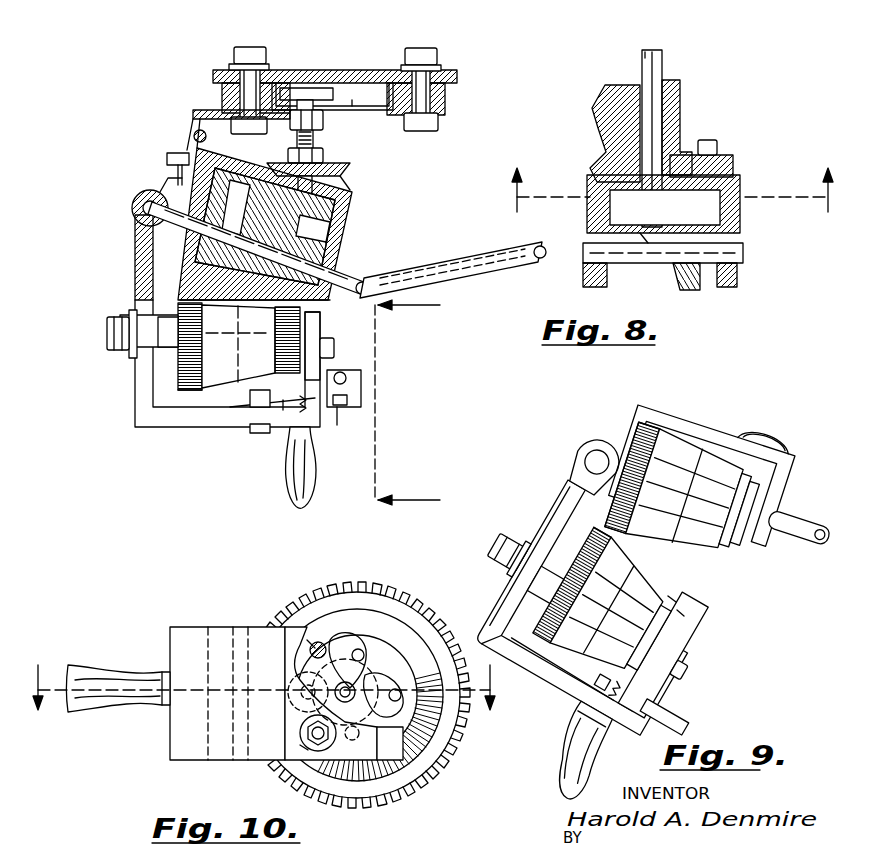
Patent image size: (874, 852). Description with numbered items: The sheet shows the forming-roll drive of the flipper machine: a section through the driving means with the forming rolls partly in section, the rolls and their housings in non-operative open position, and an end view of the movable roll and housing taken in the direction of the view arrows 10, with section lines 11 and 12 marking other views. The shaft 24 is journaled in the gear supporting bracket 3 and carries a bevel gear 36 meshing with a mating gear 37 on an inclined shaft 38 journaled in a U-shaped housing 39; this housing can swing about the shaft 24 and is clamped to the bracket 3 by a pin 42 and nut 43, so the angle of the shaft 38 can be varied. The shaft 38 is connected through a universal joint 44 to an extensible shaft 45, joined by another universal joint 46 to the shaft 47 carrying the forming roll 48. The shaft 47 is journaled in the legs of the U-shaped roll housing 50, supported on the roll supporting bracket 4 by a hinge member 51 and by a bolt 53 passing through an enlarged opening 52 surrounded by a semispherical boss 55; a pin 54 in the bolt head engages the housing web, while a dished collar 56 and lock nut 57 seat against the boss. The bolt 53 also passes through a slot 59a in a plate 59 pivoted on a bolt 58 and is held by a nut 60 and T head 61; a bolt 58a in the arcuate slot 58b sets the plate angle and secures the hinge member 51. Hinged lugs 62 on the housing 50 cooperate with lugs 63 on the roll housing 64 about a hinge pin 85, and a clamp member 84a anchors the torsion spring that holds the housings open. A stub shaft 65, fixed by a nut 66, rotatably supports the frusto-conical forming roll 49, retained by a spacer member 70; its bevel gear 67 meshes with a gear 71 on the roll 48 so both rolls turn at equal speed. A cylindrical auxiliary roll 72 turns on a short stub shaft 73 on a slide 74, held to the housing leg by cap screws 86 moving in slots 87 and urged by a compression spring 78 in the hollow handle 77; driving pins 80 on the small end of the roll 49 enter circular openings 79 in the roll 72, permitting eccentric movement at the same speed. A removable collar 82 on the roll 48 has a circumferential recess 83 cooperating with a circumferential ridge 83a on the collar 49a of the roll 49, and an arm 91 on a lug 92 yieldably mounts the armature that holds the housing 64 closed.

In FIG. 8, the gear supporting bracket 3 is at (672, 105).
In FIG. 8, the roll supporting bracket 4 is at (330, 72).
In FIG. 8, the view arrows 10— 10 is at (407, 408).
In FIG. 10, the section line 11 is at (272, 672).
In FIG. 8, the section line 12 is at (648, 204).
In FIG. 8, the shaft 24 is at (663, 68).
In FIG. 8, the bevel gear 36 is at (630, 263).
In FIG. 8, the mating gear 37 is at (690, 290).
In FIG. 8, the inclined shaft 38 is at (660, 263).
In FIG. 8, the U-shaped housing 39 is at (740, 185).
In FIG. 8, the pin 42 is at (708, 140).
In FIG. 8, the nut 43 is at (720, 155).
In FIG. 8, the universal joint 44 is at (540, 262).
In FIG. 8, the extensible shaft 45 is at (470, 282).
In FIG. 8, the universal joint 46 is at (375, 262).
In FIG. 9, the universal joint 46 is at (801, 519).
In FIG. 8, the roll shaft 47 is at (330, 240).
In FIG. 8, the forming roll 48 is at (190, 258).
In FIG. 9, the forming roll 48 is at (733, 516).
In FIG. 8, the frusto-conical forming roll 49 is at (225, 385).
In FIG. 9, the frusto-conical forming roll 49 is at (610, 607).
In FIG. 8, the removable collar 49a is at (262, 400).
In FIG. 9, the removable collar 49a is at (558, 676).
In FIG. 8, the U-shaped roll housing 50 is at (350, 205).
In FIG. 9, the U-shaped roll housing 50 is at (704, 470).
In FIG. 8, the hinge member 51 is at (196, 135).
In FIG. 8, the enlarged opening 52 is at (338, 223).
In FIG. 8, the bolt 53 is at (313, 140).
In FIG. 8, the pin 54 is at (310, 195).
In FIG. 8, the semispherical boss 55 is at (345, 182).
In FIG. 9, the semispherical boss 55 is at (767, 432).
In FIG. 8, the collar 56 is at (350, 165).
In FIG. 8, the lock nut 57 is at (290, 156).
In FIG. 8, the bolt 58 is at (425, 50).
In FIG. 8, the bolt 58a is at (248, 47).
In FIG. 8, the arcuate slot 58b is at (228, 100).
In FIG. 8, the plate 59 is at (375, 96).
In FIG. 8, the slot 59a is at (354, 100).
In FIG. 8, the nut 60 is at (323, 118).
In FIG. 8, the T head 61 is at (300, 88).
In FIG. 8, the hinged lugs 62 is at (163, 197).
In FIG. 9, the hinged lugs 62 is at (598, 460).
In FIG. 8, the lugs 63 is at (136, 215).
In FIG. 8, the roll housing 64 is at (138, 372).
In FIG. 9, the roll housing 64 is at (587, 597).
In FIG. 10, the roll housing 64 is at (192, 627).
In FIG. 8, the stub shaft 65 is at (108, 332).
In FIG. 9, the stub shaft 65 is at (502, 549).
In FIG. 8, the nut 66 is at (130, 320).
In FIG. 9, the nut 66 is at (506, 556).
In FIG. 8, the bevel gear 67 is at (190, 390).
In FIG. 9, the bevel gear 67 is at (607, 523).
In FIG. 10, the bevel gear 67 is at (385, 795).
In FIG. 8, the spacer member 70 is at (170, 340).
In FIG. 9, the spacer member 70 is at (532, 577).
In FIG. 8, the gear 71 is at (185, 277).
In FIG. 9, the gear 71 is at (673, 498).
In FIG. 9, the cylindrical auxiliary forming roll 72 is at (708, 617).
In FIG. 10, the cylindrical auxiliary forming roll 72 is at (380, 637).
In FIG. 10, the short stub shaft 73 is at (390, 743).
In FIG. 8, the slide 74 is at (315, 318).
In FIG. 9, the slide 74 is at (669, 658).
In FIG. 10, the slide 74 is at (290, 640).
In FIG. 8, the hollow handle 77 is at (292, 500).
In FIG. 9, the hollow handle 77 is at (577, 751).
In FIG. 10, the hollow handle 77 is at (105, 708).
In FIG. 9, the compression spring 78 is at (590, 727).
In FIG. 10, the circular openings 79 is at (342, 638).
In FIG. 10, the driving pins 80 is at (366, 656).
In FIG. 8, the removable collar 82 is at (303, 283).
In FIG. 9, the circumferential recess 83 is at (743, 521).
In FIG. 9, the circumferential ridge 83a is at (700, 601).
In FIG. 8, the clamp member 84a is at (170, 158).
In FIG. 8, the hinge pin 85 is at (147, 207).
In FIG. 9, the hinge pin 85 is at (584, 454).
In FIG. 8, the cap screws 86 is at (335, 347).
In FIG. 9, the cap screws 86 is at (687, 674).
In FIG. 10, the cap screws 86 is at (310, 640).
In FIG. 10, the slots 87 is at (300, 735).
In FIG. 8, the arm 91 is at (362, 380).
In FIG. 8, the lug 92 is at (340, 410).
In FIG. 9, the lug 92 is at (670, 720).